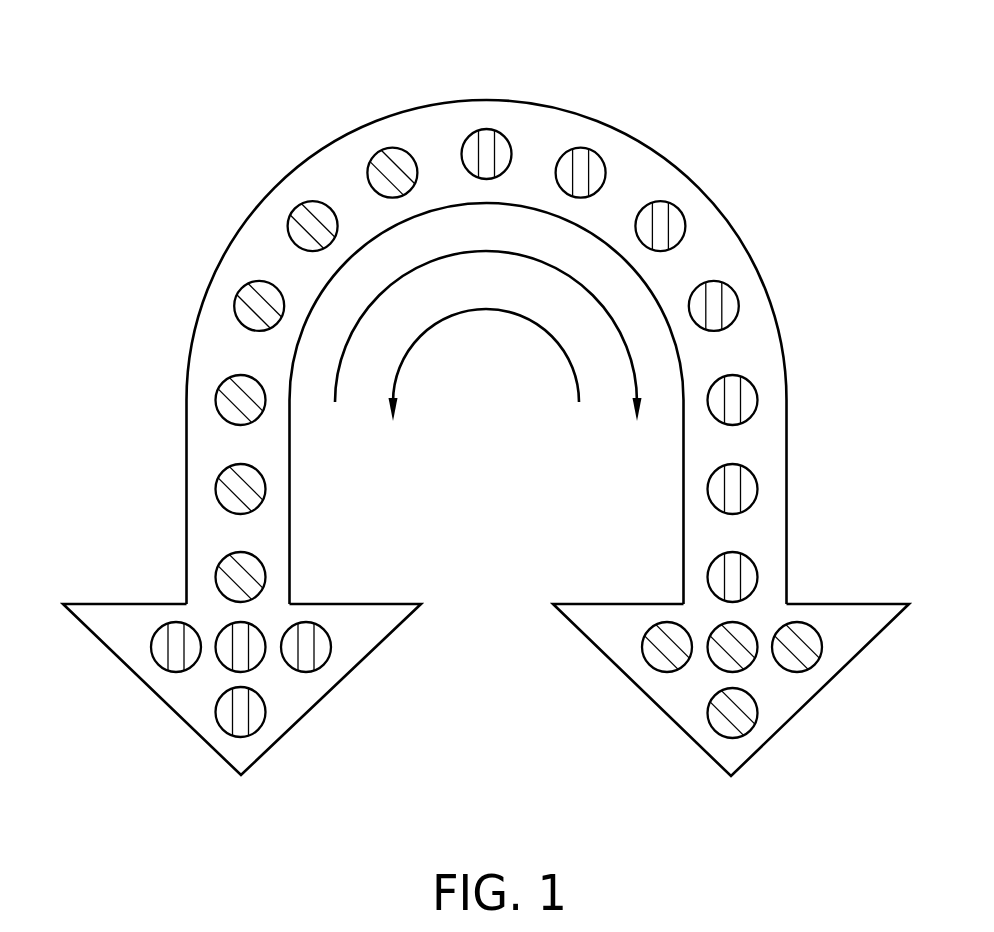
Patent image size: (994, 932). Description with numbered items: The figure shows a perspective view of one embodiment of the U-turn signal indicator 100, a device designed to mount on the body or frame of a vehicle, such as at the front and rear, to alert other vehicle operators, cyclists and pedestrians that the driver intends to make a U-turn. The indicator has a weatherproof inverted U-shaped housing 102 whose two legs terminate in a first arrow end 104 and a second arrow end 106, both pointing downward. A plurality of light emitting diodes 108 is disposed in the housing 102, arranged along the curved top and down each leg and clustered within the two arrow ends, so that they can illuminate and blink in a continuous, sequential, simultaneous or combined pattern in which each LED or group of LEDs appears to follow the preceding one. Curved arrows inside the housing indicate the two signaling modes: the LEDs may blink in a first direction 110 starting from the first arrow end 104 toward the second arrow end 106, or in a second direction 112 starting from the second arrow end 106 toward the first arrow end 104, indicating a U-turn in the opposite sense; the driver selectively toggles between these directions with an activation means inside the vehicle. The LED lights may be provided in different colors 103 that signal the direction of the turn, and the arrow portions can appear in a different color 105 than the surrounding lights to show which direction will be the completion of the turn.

The U-turn signal indicator 100 is at (474, 393).
The inverted U-shaped housing 102 is at (203, 297).
The different colors 103 is at (678, 207).
The first arrow end 104 is at (153, 698).
The different color 105 is at (320, 648).
The second arrow end 106 is at (833, 678).
The light emitting diodes 108 is at (247, 402).
The first direction 110 is at (488, 336).
The second direction 112 is at (484, 365).